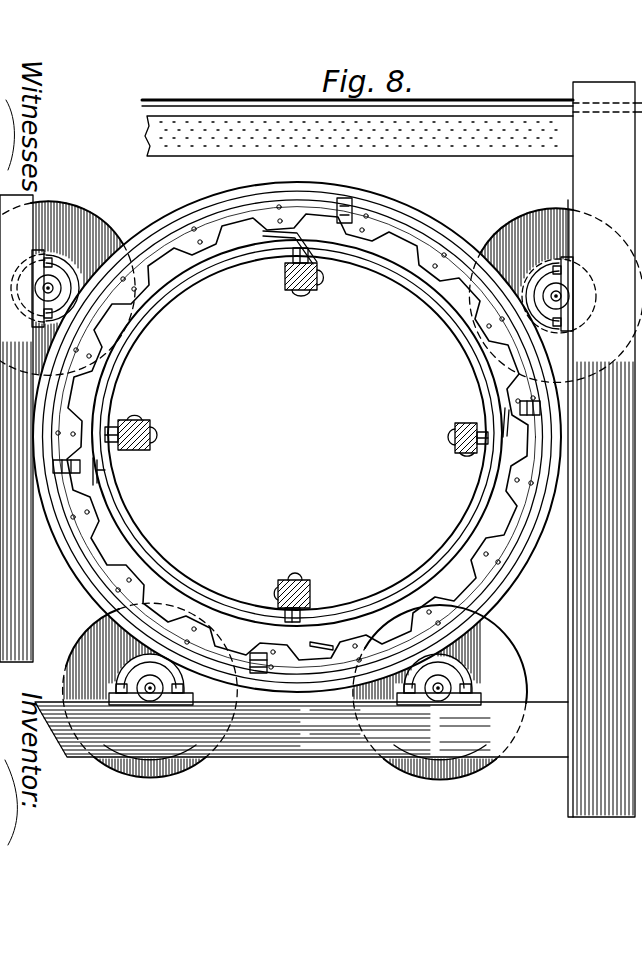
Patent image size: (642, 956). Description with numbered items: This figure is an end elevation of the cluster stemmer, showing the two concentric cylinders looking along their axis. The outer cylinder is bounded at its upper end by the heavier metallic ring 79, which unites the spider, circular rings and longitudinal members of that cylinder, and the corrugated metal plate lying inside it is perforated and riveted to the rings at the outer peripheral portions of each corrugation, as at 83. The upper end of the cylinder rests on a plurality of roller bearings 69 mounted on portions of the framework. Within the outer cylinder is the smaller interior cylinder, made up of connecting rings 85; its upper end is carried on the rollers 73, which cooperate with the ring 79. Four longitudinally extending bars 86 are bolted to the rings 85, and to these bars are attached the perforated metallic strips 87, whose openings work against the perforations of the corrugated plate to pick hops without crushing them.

The roller bearings 69 is at (98, 197).
The rollers 73 is at (72, 265).
The heavier metallic ring 79 is at (200, 224).
The riveted outer peripheral portions of corrugations 83 is at (240, 222).
The connecting rings 85 is at (398, 289).
The longitudinally extending bars 86 is at (290, 289).
The metallic strips 87 is at (268, 233).